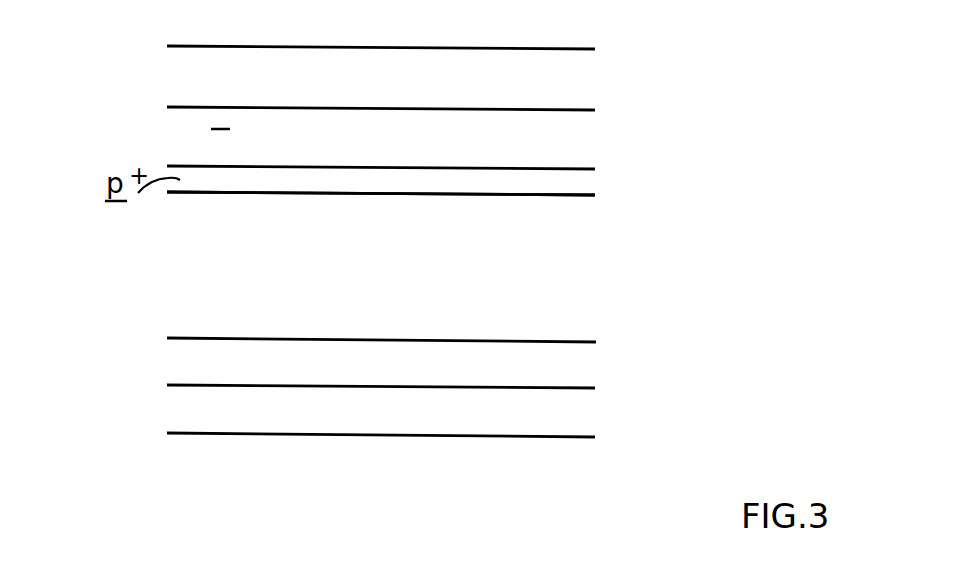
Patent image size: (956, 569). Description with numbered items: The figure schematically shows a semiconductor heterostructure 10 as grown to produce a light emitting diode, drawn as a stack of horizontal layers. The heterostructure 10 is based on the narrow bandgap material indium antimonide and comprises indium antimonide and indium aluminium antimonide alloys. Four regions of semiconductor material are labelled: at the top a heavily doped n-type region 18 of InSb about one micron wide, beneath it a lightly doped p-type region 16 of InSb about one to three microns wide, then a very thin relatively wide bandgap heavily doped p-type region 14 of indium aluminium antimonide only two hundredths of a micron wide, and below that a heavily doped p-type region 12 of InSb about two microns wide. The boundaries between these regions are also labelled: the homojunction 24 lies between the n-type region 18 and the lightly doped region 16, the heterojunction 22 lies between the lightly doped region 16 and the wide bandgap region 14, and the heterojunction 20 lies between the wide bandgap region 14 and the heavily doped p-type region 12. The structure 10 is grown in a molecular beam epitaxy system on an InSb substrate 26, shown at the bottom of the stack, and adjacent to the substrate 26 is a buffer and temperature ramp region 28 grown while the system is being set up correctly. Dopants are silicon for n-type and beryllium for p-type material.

The semiconductor heterostructure 10 is at (126, 67).
The heavily doped n-type region 18 is at (550, 80).
The p-n+ homojunction 24 is at (580, 110).
The lightly doped p-type region 16 is at (552, 145).
The wide-bandgap p+ to p- heterojunction 22 is at (580, 169).
The relatively wide bandgap heavily doped p-type region 14 is at (570, 182).
The p+ to wide-bandgap p+ heterojunction 20 is at (575, 196).
The heavily doped p-type region 12 is at (547, 278).
The buffer and temperature ramp region 28 is at (548, 370).
The InSb substrate 26 is at (550, 415).